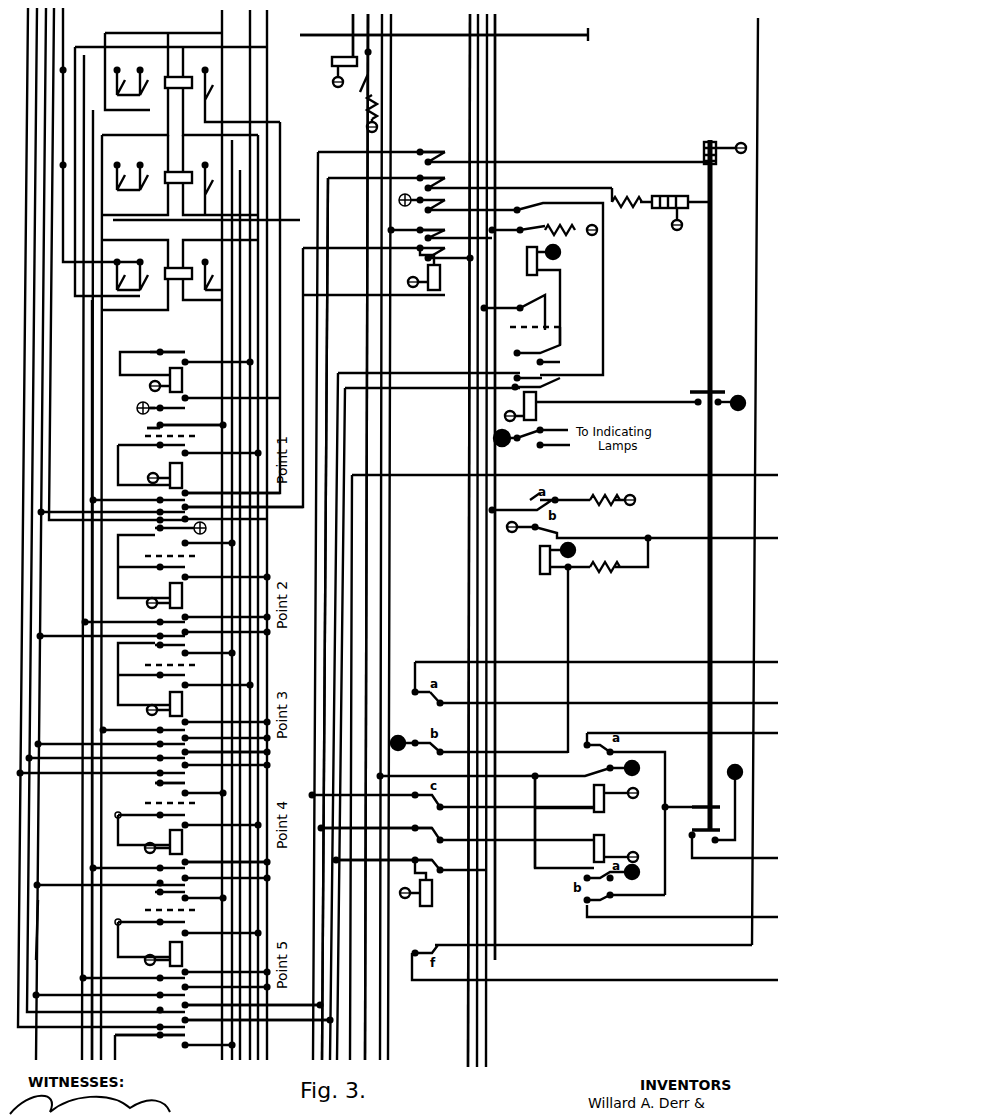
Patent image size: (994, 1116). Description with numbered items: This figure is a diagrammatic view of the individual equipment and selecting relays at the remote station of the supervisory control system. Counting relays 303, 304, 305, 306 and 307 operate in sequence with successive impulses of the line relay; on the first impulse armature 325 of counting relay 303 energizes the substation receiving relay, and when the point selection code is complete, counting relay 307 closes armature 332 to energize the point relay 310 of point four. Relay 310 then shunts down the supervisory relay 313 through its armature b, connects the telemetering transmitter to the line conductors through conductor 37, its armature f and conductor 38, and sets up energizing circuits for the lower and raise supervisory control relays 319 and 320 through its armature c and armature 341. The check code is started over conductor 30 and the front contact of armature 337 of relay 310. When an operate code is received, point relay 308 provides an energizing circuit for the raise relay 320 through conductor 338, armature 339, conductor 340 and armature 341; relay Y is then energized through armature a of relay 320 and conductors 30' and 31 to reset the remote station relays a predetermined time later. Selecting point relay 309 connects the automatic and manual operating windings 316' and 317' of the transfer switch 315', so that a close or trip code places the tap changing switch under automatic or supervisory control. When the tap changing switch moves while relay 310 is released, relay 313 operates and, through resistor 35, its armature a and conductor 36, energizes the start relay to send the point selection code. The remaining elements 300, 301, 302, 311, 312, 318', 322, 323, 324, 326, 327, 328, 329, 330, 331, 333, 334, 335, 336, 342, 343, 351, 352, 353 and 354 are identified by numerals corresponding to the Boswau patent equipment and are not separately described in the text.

The relay 300 is at (180, 84).
The relay 301 is at (180, 175).
The relay 302 is at (179, 275).
The counting relay 303 is at (182, 380).
The counting relay 304 is at (182, 475).
The counting relay 305 is at (182, 595).
The counting relay 306 is at (182, 704).
The counting relay 307 is at (182, 842).
The point relay 308 is at (182, 955).
The point relay 309 is at (438, 269).
The point relay 310 is at (432, 896).
The relay 311 is at (540, 268).
The relay 312 is at (536, 418).
The supervisory relay 313 is at (540, 558).
The lower supervisory control relay 319 is at (594, 800).
The raise relay 320 is at (594, 855).
The contact 322 is at (207, 85).
The contact 323 is at (207, 180).
The contact 324 is at (203, 272).
The armature 325 is at (178, 424).
The contact 327 is at (165, 350).
The conductor 328 is at (192, 220).
The contact 329 is at (122, 182).
The contact 330 is at (140, 427).
The contact 331 is at (120, 72).
The armature 332 is at (182, 865).
The conductor 333 is at (92, 396).
The contact 334 is at (142, 172).
The contact 335 is at (142, 75).
The contact 336 is at (143, 268).
The armature 337 is at (389, 852).
The conductor 338 is at (33, 934).
The armature 339 is at (163, 1010).
The conductor 340 is at (330, 1015).
The armature 341 is at (383, 820).
The contact 342 is at (175, 1038).
The conductor 343 is at (322, 962).
The relay 351 is at (345, 57).
The contact 352 is at (362, 86).
The contact 353 is at (180, 756).
The contact 354 is at (178, 780).
The conductor 326 is at (588, 33).
The conductor 30 is at (454, 540).
The conductor 30' is at (551, 822).
The conductor 31 is at (375, 608).
The resistor 35 is at (600, 497).
The conductor 36 is at (495, 126).
The conductor 37 is at (686, 982).
The conductor 38 is at (686, 947).
The transfer switch 315' is at (729, 485).
The automatic operating winding 316' is at (706, 153).
The manual operating winding 317' is at (661, 202).
The contact 318' is at (702, 393).